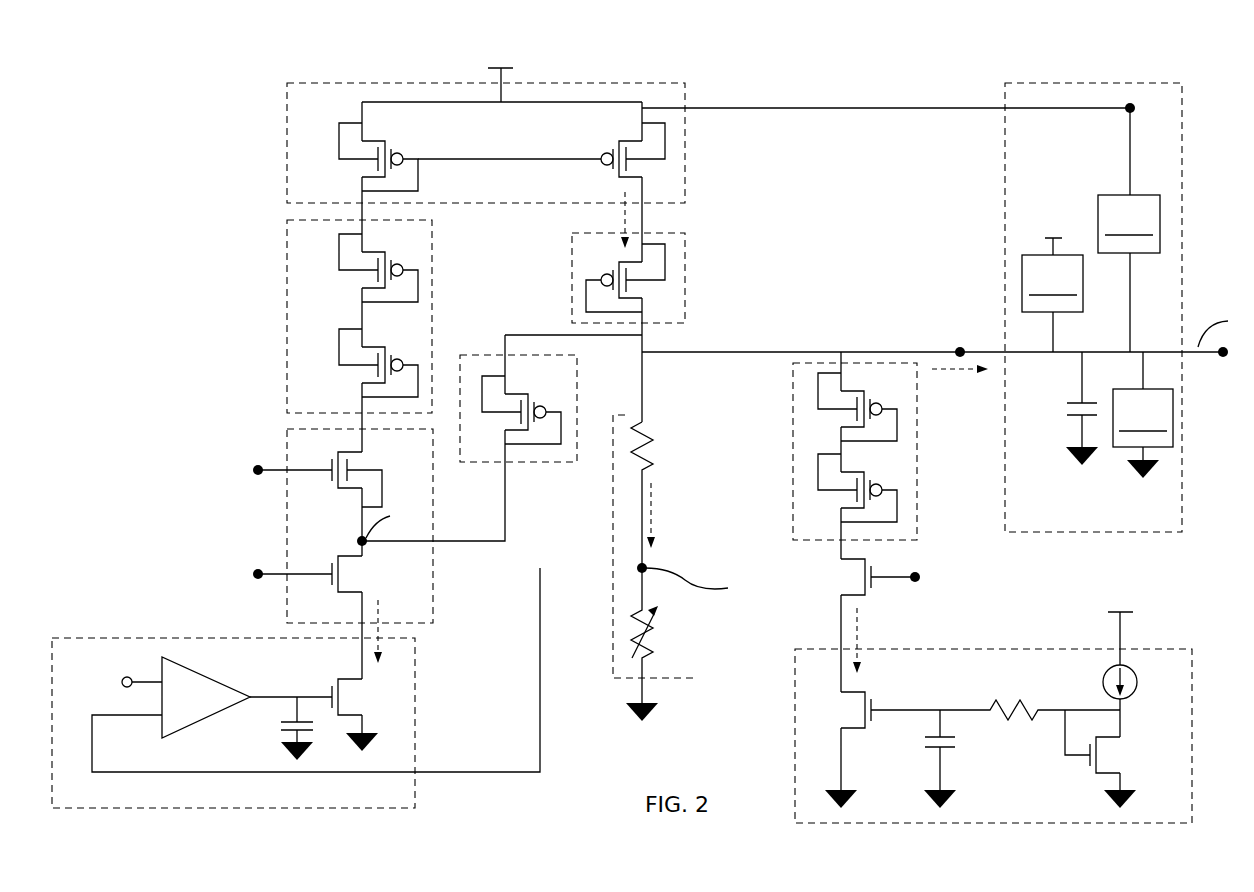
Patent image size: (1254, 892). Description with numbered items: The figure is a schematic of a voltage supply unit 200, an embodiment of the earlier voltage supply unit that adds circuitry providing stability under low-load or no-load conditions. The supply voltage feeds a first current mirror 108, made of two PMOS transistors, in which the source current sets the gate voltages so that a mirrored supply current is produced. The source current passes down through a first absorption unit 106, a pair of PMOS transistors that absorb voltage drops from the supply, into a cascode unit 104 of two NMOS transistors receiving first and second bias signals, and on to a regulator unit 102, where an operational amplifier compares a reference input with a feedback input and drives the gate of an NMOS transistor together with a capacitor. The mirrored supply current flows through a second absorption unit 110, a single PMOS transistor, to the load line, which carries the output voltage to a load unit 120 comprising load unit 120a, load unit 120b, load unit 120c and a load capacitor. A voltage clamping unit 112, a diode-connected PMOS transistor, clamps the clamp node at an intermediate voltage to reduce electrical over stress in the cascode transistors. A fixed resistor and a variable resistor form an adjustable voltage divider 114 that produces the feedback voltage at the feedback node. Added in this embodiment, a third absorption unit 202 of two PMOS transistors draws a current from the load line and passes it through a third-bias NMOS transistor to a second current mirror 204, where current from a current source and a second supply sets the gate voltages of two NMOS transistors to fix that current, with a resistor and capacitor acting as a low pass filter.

The voltage supply unit 200 is at (643, 431).
The regulator unit 102 is at (115, 637).
The cascode unit 104 is at (432, 600).
The first absorption unit 106 is at (288, 270).
The first current mirror 108 is at (288, 128).
The second absorption unit 110 is at (688, 285).
The voltage clamping unit 112 is at (525, 463).
The adjustable voltage divider 114 is at (677, 680).
The load unit 120 is at (1127, 324).
The load unit 120a is at (1129, 230).
The load unit 120b is at (1052, 281).
The load unit 120c is at (1143, 415).
The third absorption unit 202 is at (917, 462).
The second current mirror 204 is at (793, 742).